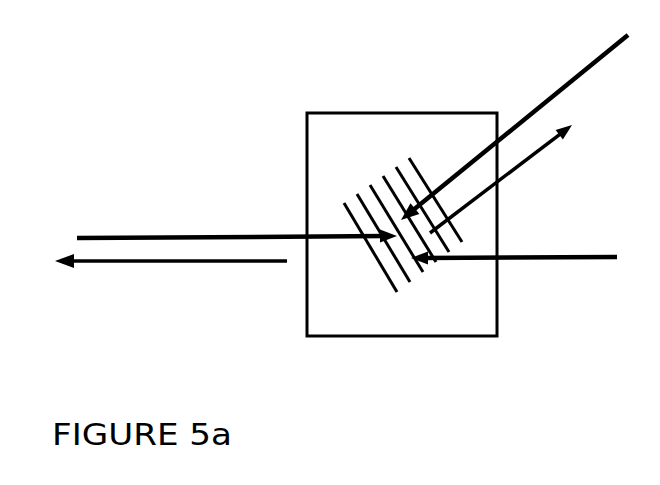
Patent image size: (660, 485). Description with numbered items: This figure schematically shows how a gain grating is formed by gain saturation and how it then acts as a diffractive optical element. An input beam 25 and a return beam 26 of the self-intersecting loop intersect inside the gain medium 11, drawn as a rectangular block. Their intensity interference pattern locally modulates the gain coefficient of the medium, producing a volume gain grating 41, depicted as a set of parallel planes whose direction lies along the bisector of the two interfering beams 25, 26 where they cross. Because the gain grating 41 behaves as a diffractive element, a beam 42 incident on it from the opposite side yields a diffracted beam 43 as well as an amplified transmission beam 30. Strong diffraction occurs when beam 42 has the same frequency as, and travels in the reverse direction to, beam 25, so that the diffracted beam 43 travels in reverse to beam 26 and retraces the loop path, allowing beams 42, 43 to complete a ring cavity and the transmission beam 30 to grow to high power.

The gain medium 11 is at (406, 96).
The input beam 25 is at (237, 212).
The return beam 26 is at (514, 117).
The amplified transmission beam 30 is at (171, 282).
The volume gain grating 41 is at (384, 283).
The incident beam 42 is at (517, 279).
The diffracted beam 43 is at (512, 179).